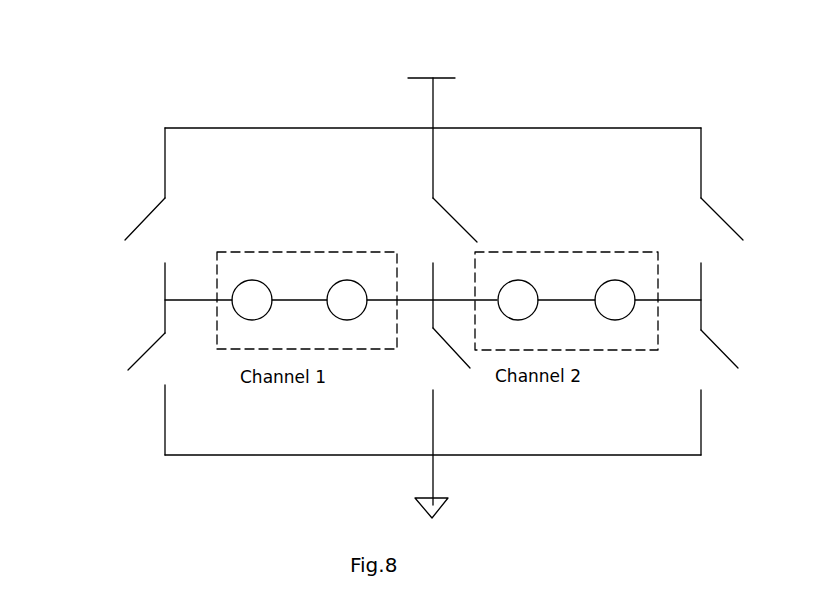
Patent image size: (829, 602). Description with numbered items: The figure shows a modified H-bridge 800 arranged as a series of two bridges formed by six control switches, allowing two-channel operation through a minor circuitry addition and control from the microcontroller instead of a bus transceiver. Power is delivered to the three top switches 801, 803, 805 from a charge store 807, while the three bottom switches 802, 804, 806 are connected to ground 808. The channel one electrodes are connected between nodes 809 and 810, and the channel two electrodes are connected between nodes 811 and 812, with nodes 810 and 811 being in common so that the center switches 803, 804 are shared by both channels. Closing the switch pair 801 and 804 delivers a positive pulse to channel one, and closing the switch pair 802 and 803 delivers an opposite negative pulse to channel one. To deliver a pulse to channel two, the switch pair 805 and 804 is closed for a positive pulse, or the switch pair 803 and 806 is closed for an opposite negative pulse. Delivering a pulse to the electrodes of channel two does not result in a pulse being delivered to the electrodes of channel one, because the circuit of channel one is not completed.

The duplexer / multi-channel filter circuit 800 is at (662, 92).
The switch 801 is at (140, 212).
The switch 802 is at (148, 350).
The switch 803 is at (447, 212).
The switch 804 is at (460, 363).
The switch 805 is at (713, 212).
The switch 806 is at (722, 352).
The charge store 807 is at (428, 73).
The ground terminal 808 is at (432, 518).
The node 809 is at (248, 280).
The node 810 is at (343, 280).
The node 811 is at (527, 285).
The node 812 is at (593, 288).